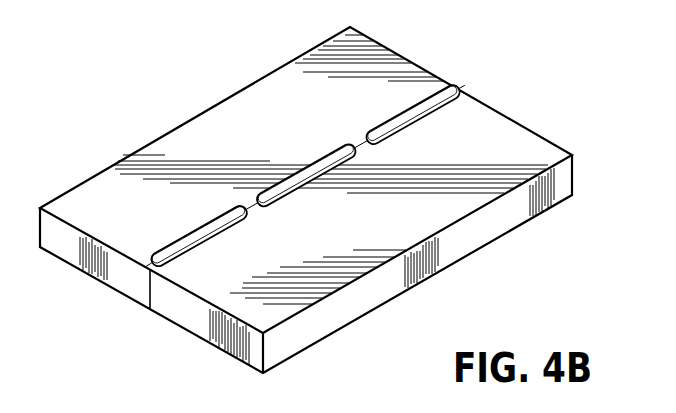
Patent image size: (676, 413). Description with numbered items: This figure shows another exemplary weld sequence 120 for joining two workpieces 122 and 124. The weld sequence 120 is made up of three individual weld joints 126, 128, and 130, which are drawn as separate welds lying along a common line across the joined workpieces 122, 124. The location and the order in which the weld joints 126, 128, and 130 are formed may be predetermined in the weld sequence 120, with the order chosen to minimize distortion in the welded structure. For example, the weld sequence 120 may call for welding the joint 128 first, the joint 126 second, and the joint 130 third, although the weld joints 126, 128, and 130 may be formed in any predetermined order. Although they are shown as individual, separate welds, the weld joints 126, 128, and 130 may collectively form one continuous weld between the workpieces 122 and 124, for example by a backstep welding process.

The weld sequence 120 is at (306, 199).
The workpiece 122 is at (440, 266).
The workpiece 124 is at (208, 125).
The weld joint 126 is at (412, 116).
The weld joint 128 is at (293, 194).
The weld joint 130 is at (198, 249).